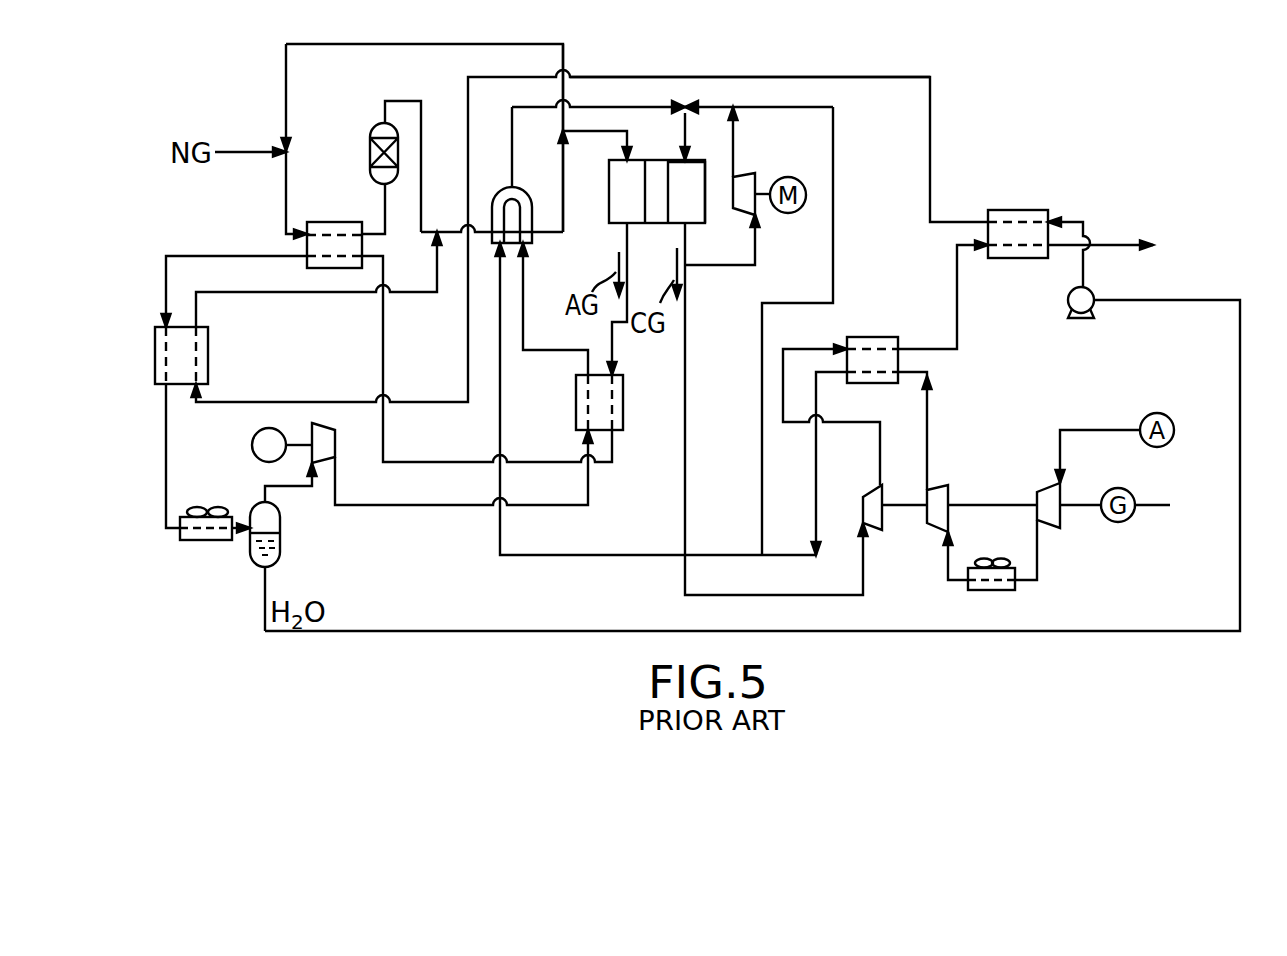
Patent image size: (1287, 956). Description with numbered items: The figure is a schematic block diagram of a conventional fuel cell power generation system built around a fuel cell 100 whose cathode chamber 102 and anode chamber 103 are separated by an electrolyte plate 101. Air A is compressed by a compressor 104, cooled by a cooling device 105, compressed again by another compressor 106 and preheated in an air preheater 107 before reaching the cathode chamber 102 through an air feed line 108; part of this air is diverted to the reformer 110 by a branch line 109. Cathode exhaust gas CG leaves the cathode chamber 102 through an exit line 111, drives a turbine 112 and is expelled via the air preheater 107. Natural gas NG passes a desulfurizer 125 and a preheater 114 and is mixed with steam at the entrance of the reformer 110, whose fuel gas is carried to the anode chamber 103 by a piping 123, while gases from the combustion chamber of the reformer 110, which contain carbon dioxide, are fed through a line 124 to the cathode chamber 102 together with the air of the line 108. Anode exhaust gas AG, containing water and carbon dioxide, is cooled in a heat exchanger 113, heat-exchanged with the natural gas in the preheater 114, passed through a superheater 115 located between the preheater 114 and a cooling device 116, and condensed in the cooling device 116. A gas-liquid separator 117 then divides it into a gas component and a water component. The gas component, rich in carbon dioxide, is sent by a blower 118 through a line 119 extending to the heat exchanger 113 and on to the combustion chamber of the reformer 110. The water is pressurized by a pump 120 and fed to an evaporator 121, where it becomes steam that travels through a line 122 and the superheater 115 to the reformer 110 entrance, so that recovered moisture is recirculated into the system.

The fuel cell 100 is at (656, 160).
The electrolyte plate 101 is at (654, 220).
The cathode chamber 102 is at (716, 154).
The anode chamber 103 is at (616, 188).
The compressor 104 is at (1062, 518).
The cooling device 105 is at (1003, 590).
The compressor 106 is at (948, 490).
The air preheater 107 is at (892, 337).
The air feed line 108 is at (834, 238).
The branch line 109 is at (634, 556).
The reformer 110 is at (494, 194).
The exit line 111 is at (687, 440).
The turbine 112 is at (884, 522).
The heat exchanger 113 is at (623, 410).
The preheater 114 is at (337, 222).
The superheater 115 is at (210, 368).
The cooling device 116 is at (211, 541).
The gas-liquid separator 117 is at (282, 540).
The blower 118 is at (335, 443).
The line 119 is at (456, 507).
The pump 120 is at (1068, 308).
The evaporator 121 is at (1033, 210).
The line 122 is at (925, 60).
The piping 123 is at (565, 215).
The line 124 is at (512, 166).
The desulfurizer 125 is at (370, 132).